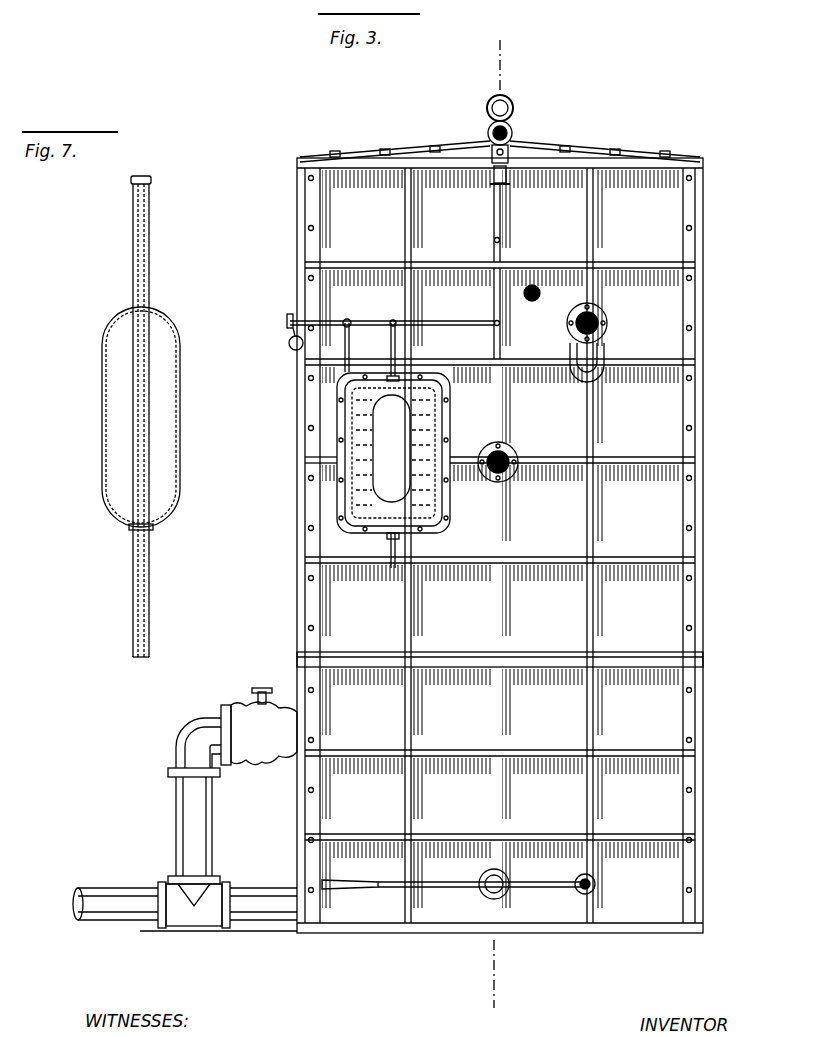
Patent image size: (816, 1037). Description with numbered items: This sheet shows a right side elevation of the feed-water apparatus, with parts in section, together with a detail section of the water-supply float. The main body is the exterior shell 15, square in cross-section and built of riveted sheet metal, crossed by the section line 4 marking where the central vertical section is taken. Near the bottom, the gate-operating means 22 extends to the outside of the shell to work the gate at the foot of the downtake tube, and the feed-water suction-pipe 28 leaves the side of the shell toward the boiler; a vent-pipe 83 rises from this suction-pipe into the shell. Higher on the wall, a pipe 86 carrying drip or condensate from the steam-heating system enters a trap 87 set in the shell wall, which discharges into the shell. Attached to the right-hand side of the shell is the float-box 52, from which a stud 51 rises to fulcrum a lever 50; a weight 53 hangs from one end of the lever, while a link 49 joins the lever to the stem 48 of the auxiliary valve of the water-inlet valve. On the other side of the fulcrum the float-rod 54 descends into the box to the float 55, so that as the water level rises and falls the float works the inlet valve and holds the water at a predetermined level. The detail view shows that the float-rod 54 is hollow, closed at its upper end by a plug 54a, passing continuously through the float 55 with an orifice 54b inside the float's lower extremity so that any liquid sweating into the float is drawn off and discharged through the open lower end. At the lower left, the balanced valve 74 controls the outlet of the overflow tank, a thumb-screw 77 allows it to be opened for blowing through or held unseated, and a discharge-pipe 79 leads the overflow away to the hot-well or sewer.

In FIG. 3, the section line 4 4 is at (505, 525).
In FIG. 3, the exterior shell 15 is at (500, 545).
In FIG. 3, the gate-operating means 22 is at (550, 875).
In FIG. 3, the feed-water suction-pipe 28 is at (510, 452).
In FIG. 3, the stem 48 is at (494, 214).
In FIG. 3, the link 49 is at (500, 296).
In FIG. 3, the lever 50 is at (445, 321).
In FIG. 3, the stud 51 is at (351, 332).
In FIG. 3, the float-box 52 is at (447, 430).
In FIG. 3, the weight 53 is at (289, 343).
In FIG. 3, the float-rod 54 is at (398, 346).
In FIG. 7, the float-rod 54 is at (150, 280).
In FIG. 7, the plug 54a is at (150, 178).
In FIG. 7, the orifice 54b is at (133, 520).
In FIG. 3, the float 55 is at (391, 448).
In FIG. 7, the float 55 is at (181, 402).
In FIG. 3, the balanced valve 74 is at (259, 733).
In FIG. 3, the thumb-screw 77 is at (262, 688).
In FIG. 3, the discharge-pipe 79 is at (178, 828).
In FIG. 3, the vent-pipe 83 is at (541, 293).
In FIG. 3, the pipe 86 is at (600, 316).
In FIG. 3, the trap 87 is at (590, 372).